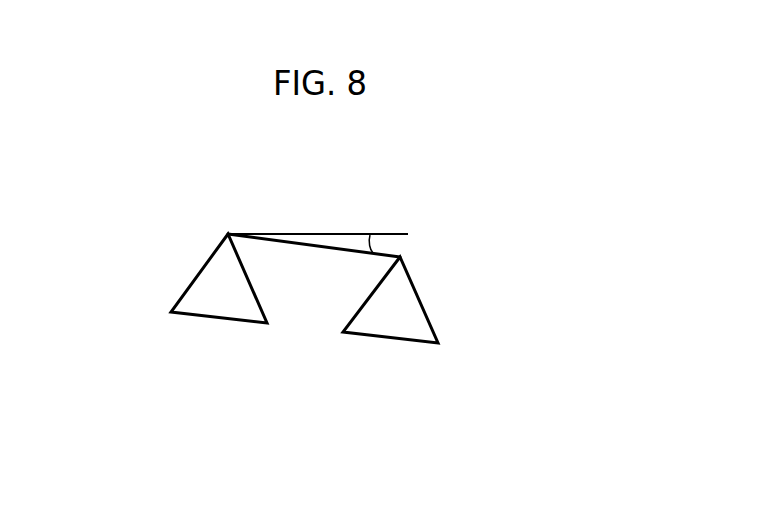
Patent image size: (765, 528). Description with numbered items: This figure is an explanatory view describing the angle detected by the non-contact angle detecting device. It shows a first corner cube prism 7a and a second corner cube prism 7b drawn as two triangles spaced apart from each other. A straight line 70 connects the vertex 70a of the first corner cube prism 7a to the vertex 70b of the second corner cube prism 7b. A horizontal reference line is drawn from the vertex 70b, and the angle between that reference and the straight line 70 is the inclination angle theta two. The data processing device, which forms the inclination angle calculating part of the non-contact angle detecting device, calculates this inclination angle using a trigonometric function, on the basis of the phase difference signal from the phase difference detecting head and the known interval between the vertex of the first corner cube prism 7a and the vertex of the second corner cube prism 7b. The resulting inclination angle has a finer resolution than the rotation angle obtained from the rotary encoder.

The straight line 70 is at (313, 245).
The vertex of the first corner cube prism 70a is at (403, 251).
The vertex of the second corner cube prism 70b is at (228, 234).
The first corner cube prism 7a is at (408, 305).
The second corner cube prism 7b is at (212, 275).